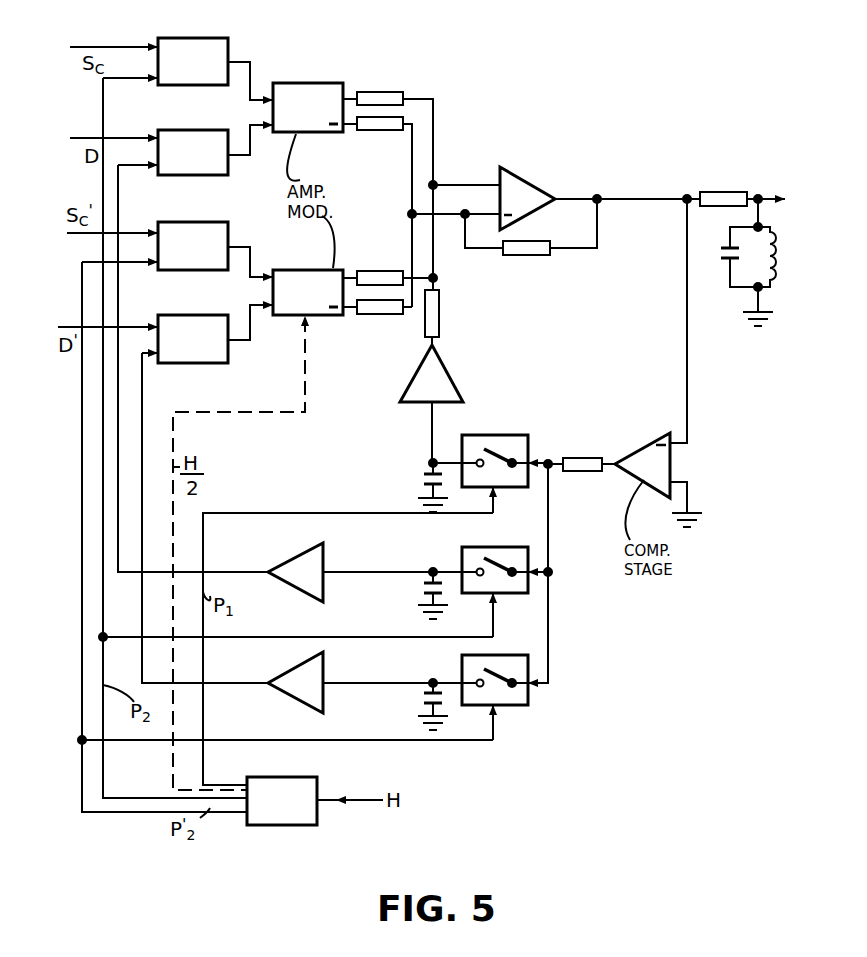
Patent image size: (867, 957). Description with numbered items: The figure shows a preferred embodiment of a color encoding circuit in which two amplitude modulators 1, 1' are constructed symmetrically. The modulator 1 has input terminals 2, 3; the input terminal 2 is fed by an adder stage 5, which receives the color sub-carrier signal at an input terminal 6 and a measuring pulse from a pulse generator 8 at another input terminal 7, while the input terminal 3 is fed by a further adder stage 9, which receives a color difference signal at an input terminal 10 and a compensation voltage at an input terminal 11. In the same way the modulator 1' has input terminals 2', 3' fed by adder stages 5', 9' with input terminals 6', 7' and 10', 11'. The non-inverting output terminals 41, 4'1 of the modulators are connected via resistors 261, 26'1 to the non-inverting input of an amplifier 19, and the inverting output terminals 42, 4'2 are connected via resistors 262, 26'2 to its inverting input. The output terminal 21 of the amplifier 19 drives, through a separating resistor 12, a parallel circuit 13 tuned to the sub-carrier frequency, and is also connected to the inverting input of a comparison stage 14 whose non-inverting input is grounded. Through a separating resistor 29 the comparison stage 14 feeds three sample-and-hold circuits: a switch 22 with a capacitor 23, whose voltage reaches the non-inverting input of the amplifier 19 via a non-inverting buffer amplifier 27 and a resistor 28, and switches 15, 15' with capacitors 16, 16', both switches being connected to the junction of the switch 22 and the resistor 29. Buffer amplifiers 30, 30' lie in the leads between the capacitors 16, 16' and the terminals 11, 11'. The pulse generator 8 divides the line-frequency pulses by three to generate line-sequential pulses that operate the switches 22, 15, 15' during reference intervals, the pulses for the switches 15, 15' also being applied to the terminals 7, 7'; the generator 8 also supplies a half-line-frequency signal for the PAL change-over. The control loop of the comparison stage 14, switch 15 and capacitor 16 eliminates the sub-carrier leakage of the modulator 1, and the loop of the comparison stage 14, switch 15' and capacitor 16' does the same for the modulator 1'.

The amplitude modulator 1 is at (308, 123).
The input terminal 2 is at (250, 83).
The input terminal 3 is at (250, 142).
The non-inverting output terminal 41 is at (352, 97).
The inverting output terminal 42 is at (344, 132).
The adder stage 5 is at (198, 71).
The input terminal 6 is at (151, 26).
The input terminal 7 is at (150, 97).
The pulse generator 8 is at (310, 781).
The adder stage 9 is at (201, 162).
The input terminal 10 is at (148, 117).
The input terminal 11 is at (152, 188).
The separating resistor 12 is at (723, 191).
The parallel circuit 13 is at (778, 280).
The comparison stage 14 is at (642, 440).
The switch 15 is at (490, 585).
The capacitor 16 is at (420, 593).
The non-inverting amplifier 19 is at (534, 191).
The output terminal 21 is at (598, 196).
The switch 22 is at (516, 436).
The capacitor 23 is at (422, 470).
The resistor 261 is at (384, 92).
The resistor 262 is at (388, 131).
The non-inverting buffer amplifier 27 is at (445, 371).
The resistor 28 is at (440, 313).
The separating resistor 29 is at (582, 458).
The buffer amplifier 30 is at (365, 572).
The amplitude modulator 1' is at (308, 278).
The input terminal 2' is at (250, 264).
The input terminal 3' is at (250, 323).
The non-inverting output terminal 4'1 is at (345, 259).
The inverting output terminal 4'2 is at (339, 329).
The adder stage 5' is at (200, 258).
The input terminal 6' is at (154, 207).
The input terminal 7' is at (150, 281).
The adder stage 9' is at (202, 352).
The input terminal 10' is at (150, 300).
The input terminal 11' is at (154, 376).
The resistor 26'1 is at (395, 263).
The resistor 26'2 is at (384, 325).
The switch 15' is at (483, 692).
The capacitor 16' is at (419, 704).
The buffer amplifier 30' is at (365, 681).